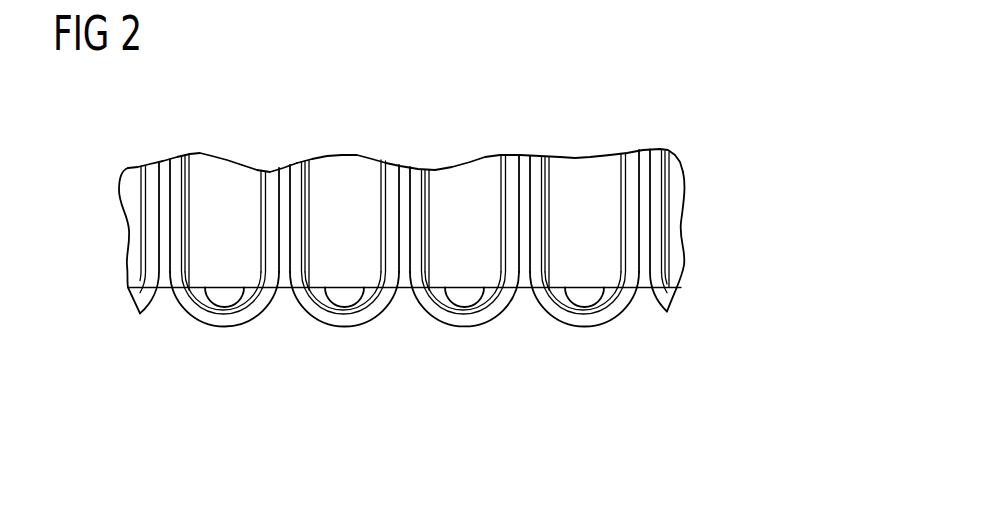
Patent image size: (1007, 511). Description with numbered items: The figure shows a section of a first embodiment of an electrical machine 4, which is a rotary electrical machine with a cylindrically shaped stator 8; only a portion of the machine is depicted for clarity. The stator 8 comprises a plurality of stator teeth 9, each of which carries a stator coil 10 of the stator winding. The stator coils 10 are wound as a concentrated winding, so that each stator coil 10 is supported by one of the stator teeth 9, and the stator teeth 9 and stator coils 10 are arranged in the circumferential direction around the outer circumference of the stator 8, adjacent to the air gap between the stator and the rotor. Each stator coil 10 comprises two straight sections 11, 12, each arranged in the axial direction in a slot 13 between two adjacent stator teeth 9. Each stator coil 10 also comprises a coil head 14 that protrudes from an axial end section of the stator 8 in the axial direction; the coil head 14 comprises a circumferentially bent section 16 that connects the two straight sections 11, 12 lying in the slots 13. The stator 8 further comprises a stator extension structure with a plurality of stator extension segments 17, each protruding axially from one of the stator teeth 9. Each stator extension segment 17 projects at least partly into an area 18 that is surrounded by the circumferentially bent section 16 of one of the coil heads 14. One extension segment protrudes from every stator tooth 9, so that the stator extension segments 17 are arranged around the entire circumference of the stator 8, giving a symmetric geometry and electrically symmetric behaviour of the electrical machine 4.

The electrical machine 4 is at (482, 215).
The stator 8 is at (470, 105).
The stator tooth 9 is at (219, 172).
The stator coil 10 is at (273, 173).
The straight section 11 is at (178, 212).
The straight section 12 is at (268, 213).
The slot 13 is at (285, 290).
The coil head 14 is at (404, 339).
The circumferentially bent section 16 is at (228, 321).
The stator extension segment 17 is at (222, 302).
The area 18 is at (199, 292).